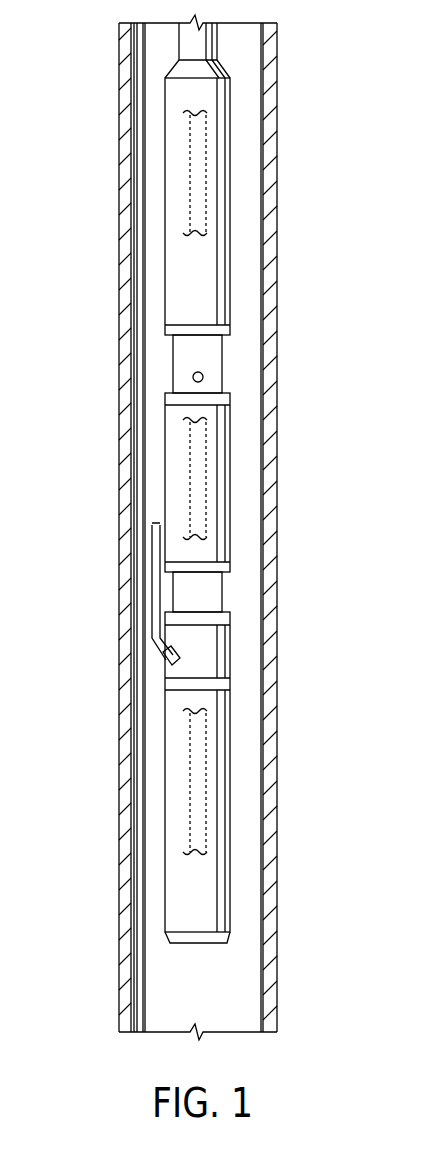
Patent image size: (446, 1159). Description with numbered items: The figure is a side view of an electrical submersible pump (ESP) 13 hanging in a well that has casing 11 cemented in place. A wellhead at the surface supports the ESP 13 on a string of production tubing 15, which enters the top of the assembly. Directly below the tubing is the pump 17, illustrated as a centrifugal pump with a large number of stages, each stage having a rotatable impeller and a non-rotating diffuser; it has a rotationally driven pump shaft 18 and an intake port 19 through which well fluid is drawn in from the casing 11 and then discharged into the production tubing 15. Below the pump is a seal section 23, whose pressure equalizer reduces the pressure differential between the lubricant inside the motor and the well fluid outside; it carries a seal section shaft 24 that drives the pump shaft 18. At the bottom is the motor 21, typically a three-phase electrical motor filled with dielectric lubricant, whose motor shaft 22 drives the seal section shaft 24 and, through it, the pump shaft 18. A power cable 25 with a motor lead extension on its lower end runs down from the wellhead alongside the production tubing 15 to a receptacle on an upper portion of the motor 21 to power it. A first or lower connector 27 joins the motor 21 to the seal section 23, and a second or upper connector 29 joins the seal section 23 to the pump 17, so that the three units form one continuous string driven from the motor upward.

The casing 11 is at (118, 851).
The electrical submersible pump (ESP) 13 is at (160, 361).
The production tubing 15 is at (178, 45).
The pump 17 is at (192, 206).
The pump shaft 18 is at (206, 176).
The intake port 19 is at (204, 377).
The motor 21 is at (183, 777).
The motor shaft 22 is at (206, 783).
The seal section 23 is at (191, 482).
The seal section shaft 24 is at (206, 483).
The power cable 25 is at (150, 592).
The first or lower connector 27 is at (213, 591).
The second or upper connector 29 is at (258, 358).